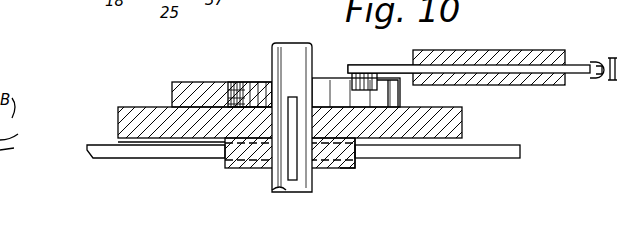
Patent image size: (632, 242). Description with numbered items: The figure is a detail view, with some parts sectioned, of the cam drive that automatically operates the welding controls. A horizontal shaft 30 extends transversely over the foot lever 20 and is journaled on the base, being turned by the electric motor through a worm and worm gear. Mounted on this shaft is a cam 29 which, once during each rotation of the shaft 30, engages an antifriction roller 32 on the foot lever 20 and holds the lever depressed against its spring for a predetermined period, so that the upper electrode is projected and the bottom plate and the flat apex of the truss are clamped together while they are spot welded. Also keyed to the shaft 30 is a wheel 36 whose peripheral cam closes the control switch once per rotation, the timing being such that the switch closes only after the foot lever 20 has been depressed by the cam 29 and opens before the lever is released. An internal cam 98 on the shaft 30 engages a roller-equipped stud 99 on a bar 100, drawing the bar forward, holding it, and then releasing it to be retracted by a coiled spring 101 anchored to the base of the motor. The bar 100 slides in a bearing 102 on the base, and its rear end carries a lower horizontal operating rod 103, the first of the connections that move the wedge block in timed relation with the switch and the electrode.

The foot lever 20 is at (205, 158).
The cam 29 is at (356, 166).
The horizontal shaft 30 is at (286, 59).
The antifriction roller 32 is at (262, 158).
The wheel 36 is at (118, 143).
The internal cam 98 is at (227, 88).
The roller-equipped stud 99 is at (350, 80).
The bar 100 is at (493, 86).
The coiled spring 101 is at (604, 78).
The bearing 102 is at (523, 62).
The lower horizontal operating rod 103 is at (617, 82).